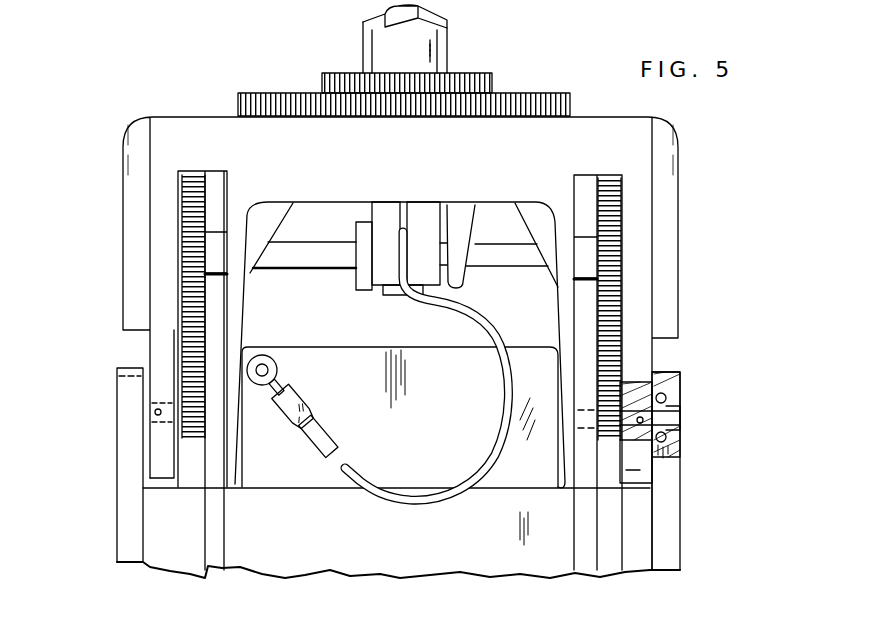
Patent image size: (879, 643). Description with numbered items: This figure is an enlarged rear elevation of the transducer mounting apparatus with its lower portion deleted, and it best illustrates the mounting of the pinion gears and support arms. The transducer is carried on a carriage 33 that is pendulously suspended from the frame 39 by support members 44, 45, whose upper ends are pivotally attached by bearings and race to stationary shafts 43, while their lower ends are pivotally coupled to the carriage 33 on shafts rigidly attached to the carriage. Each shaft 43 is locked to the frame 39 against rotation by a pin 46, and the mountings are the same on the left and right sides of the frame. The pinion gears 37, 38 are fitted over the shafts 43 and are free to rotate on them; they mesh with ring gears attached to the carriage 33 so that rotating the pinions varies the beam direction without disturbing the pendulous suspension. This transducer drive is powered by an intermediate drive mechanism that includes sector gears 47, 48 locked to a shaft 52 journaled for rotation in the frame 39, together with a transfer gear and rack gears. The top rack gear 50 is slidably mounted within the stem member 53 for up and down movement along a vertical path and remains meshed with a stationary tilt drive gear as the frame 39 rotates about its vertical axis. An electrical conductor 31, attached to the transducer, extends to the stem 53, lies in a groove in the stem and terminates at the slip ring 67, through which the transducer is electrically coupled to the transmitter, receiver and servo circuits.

The electrical conductor 31 is at (362, 491).
The carriage 33 is at (522, 368).
The pinion gear 37 is at (600, 447).
The pinion gear 38 is at (192, 440).
The frame 39 is at (603, 141).
The shaft 43 is at (132, 437).
The support member 44 is at (667, 540).
The support member 45 is at (128, 517).
The pin 46 is at (155, 410).
The sector gear 47 is at (603, 300).
The sector gear 48 is at (190, 267).
The top rack gear 50 is at (388, 11).
The shaft 52 is at (307, 262).
The stem member 53 is at (440, 50).
The slip ring 67 is at (404, 212).